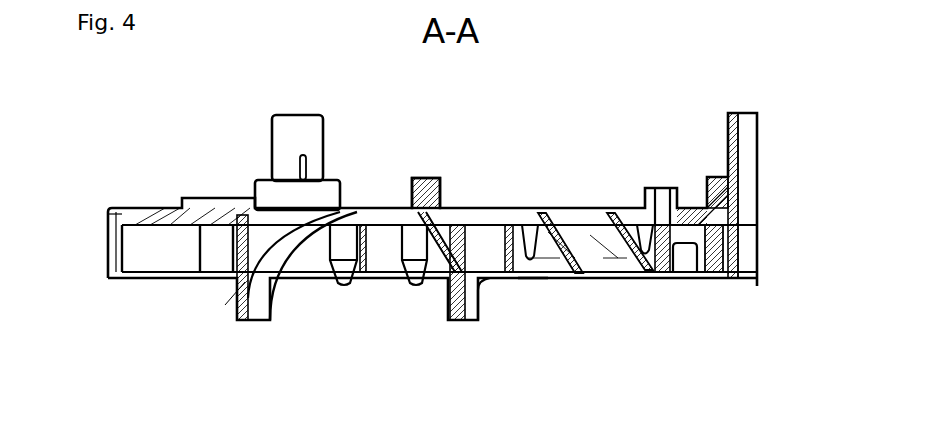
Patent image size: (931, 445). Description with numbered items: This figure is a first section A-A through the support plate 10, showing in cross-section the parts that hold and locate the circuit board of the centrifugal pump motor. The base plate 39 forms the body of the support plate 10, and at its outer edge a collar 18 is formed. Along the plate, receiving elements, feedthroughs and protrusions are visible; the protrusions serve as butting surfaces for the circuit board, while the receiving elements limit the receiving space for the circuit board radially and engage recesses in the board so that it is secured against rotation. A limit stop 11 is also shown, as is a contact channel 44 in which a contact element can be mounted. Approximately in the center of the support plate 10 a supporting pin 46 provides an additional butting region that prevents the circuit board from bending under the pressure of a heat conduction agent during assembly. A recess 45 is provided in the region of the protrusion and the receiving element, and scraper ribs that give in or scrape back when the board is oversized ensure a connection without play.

The support plate 10 is at (557, 86).
The limit stop 11 is at (675, 280).
The collar 18 is at (117, 248).
The base plate 39 is at (493, 210).
The contact channel 44 is at (715, 280).
The recess 45 is at (747, 177).
The supporting pin 46 is at (428, 178).